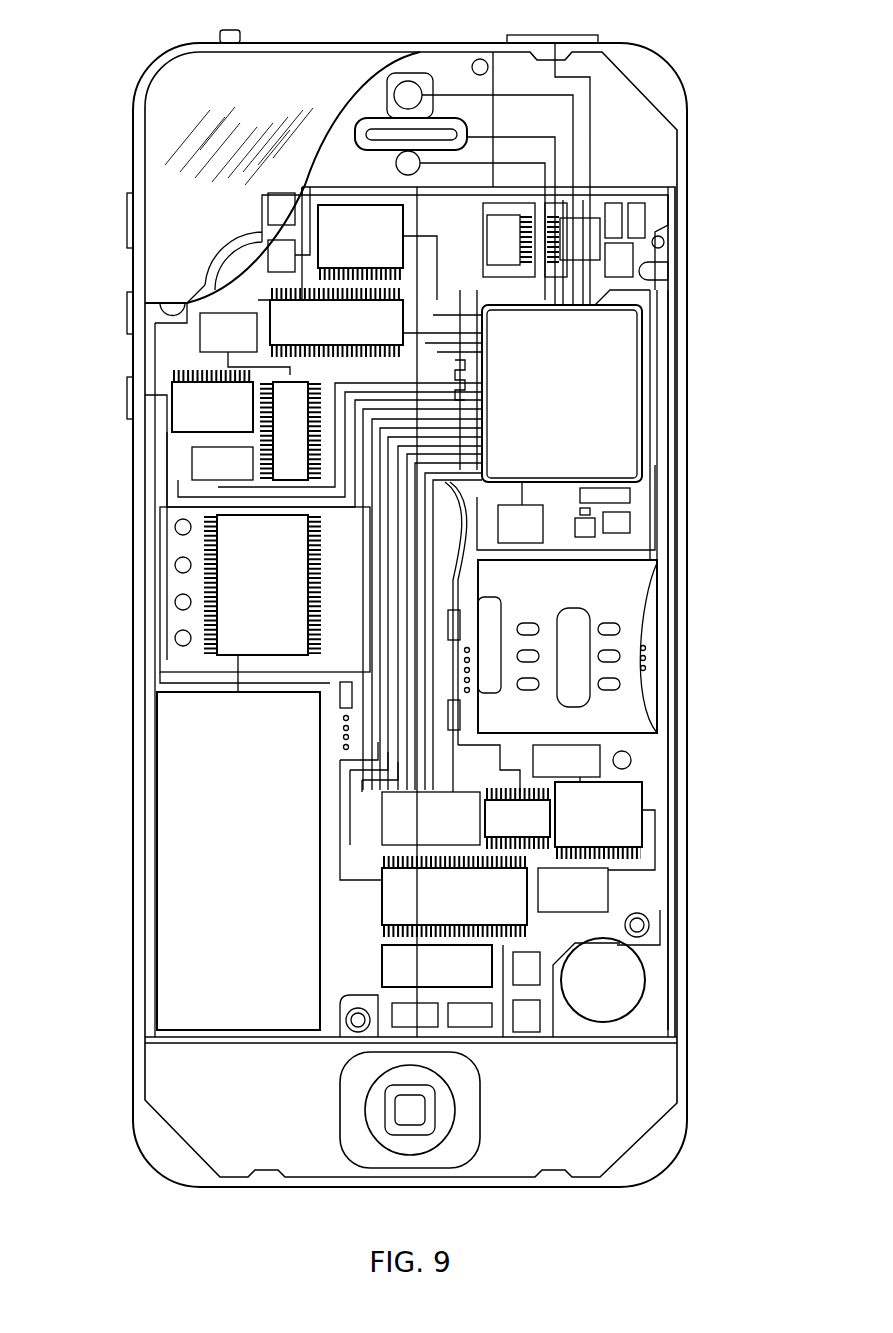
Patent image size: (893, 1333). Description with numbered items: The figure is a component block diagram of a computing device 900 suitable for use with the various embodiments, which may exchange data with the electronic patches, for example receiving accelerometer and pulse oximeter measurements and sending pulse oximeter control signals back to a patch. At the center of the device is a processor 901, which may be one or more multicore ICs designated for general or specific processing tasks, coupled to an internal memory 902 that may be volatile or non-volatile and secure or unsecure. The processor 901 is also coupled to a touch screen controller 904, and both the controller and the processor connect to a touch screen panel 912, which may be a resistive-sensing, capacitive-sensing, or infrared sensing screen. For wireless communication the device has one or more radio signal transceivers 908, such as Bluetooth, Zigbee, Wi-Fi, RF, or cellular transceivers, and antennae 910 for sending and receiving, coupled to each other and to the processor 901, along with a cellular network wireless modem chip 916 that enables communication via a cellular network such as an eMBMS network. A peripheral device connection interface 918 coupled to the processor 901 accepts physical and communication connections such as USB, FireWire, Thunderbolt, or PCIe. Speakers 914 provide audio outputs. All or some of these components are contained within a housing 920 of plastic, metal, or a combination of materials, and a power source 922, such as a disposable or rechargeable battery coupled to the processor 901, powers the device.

The computing device 900 is at (140, 68).
The processor 901 is at (562, 393).
The internal memory 902 is at (336, 322).
The touch screen controller 904 is at (360, 239).
The radio signal transceivers 908 is at (597, 218).
The antennae 910 is at (635, 257).
The touch screen panel 912 is at (160, 178).
The speakers 914 is at (372, 120).
The cellular network wireless modem chip 916 is at (454, 896).
The peripheral device connection interface 918 is at (437, 966).
The housing 920 is at (688, 1013).
The power source 922 is at (238, 861).